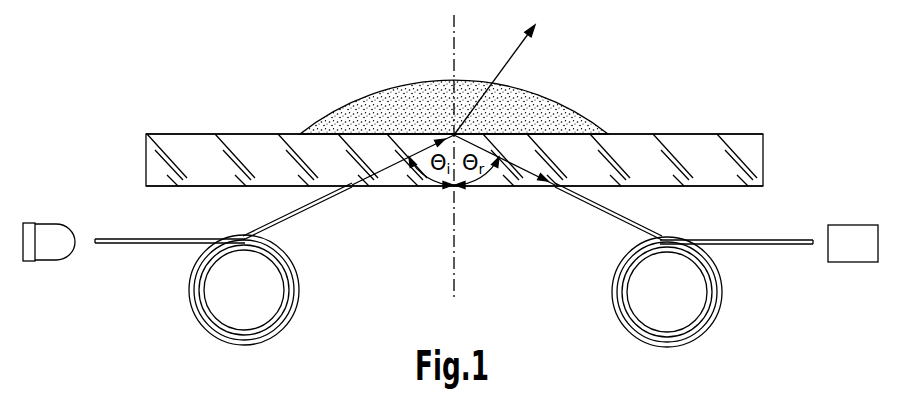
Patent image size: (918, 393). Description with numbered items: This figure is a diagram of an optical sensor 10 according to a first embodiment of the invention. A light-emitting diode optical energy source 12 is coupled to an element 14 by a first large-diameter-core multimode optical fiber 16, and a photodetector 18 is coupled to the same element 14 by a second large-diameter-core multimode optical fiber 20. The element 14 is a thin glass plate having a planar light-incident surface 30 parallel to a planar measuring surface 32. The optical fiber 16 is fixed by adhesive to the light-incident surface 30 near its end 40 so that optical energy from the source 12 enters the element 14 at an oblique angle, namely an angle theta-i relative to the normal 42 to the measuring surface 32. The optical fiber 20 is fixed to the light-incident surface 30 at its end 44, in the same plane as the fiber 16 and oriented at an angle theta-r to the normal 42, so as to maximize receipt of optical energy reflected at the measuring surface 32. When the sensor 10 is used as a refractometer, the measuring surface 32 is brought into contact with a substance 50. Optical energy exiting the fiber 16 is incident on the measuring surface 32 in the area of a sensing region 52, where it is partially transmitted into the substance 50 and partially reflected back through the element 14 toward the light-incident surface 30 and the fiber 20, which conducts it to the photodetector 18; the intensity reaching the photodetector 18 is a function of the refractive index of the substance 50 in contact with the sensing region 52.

The optical sensor 10 is at (690, 84).
The optical energy source 12 is at (28, 223).
The element 14 is at (715, 150).
The first large-diameter-core multimode optical fiber 16 is at (103, 245).
The photodetector 18 is at (840, 223).
The second large-diameter-core multimode optical fiber 20 is at (785, 246).
The light-incident surface 30 is at (232, 187).
The measuring surface 32 is at (255, 133).
The end of the first optical fiber 40 is at (358, 188).
The normal 42 is at (455, 258).
The end of the second optical fiber 44 is at (552, 186).
The substance 50 is at (601, 127).
The sensing region 52 is at (454, 135).